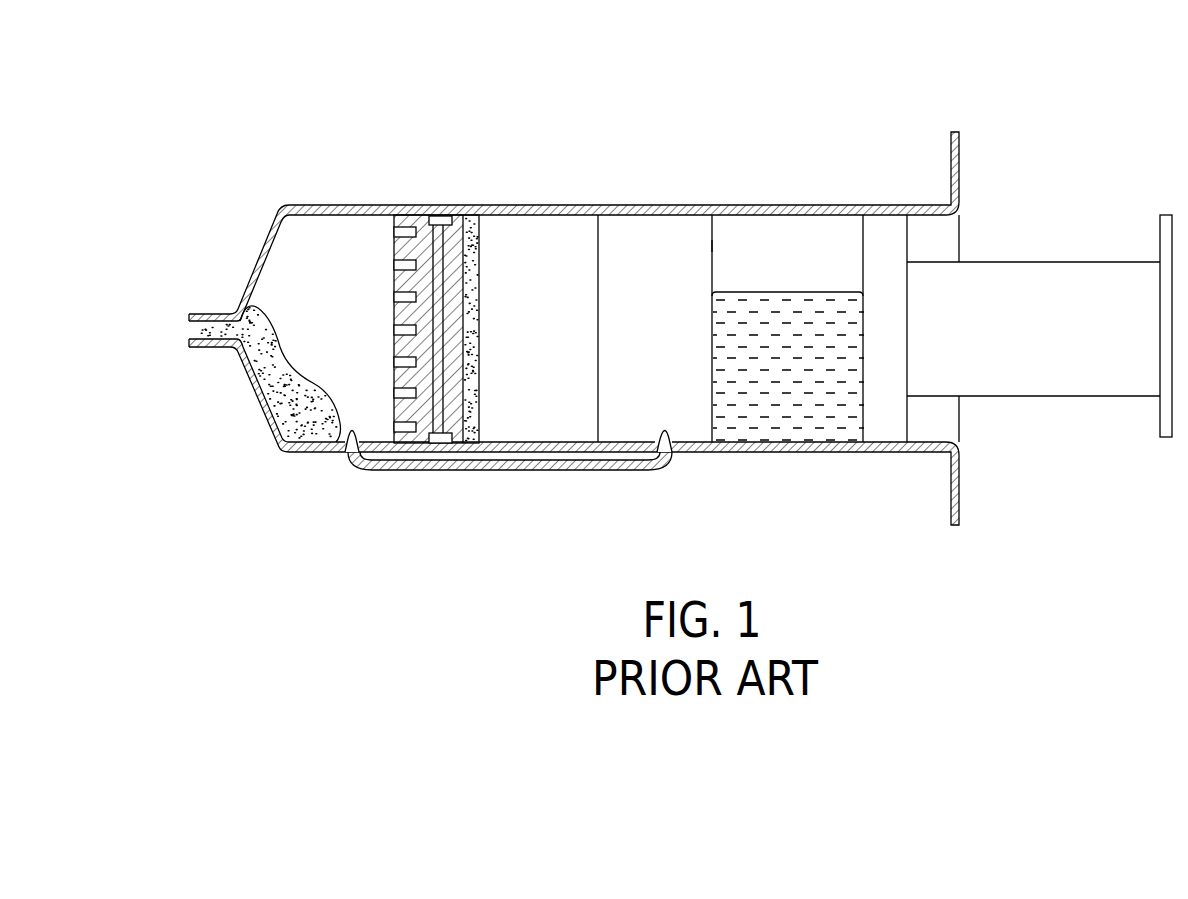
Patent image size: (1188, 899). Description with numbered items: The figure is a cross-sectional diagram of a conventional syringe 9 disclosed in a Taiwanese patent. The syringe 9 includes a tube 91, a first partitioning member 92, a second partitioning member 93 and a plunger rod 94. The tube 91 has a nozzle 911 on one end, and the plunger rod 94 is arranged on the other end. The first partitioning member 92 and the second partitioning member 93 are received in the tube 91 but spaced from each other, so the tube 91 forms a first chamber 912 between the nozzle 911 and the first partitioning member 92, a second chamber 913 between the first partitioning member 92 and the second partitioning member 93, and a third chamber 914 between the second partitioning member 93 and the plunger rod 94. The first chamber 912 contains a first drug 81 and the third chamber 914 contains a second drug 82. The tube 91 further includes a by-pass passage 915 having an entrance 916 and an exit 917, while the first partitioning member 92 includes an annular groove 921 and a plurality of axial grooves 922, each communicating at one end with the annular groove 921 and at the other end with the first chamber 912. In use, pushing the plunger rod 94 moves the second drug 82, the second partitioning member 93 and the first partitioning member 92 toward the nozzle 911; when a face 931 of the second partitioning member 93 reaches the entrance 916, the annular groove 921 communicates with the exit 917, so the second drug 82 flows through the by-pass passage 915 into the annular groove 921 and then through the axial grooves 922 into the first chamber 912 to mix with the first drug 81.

The syringe 9 is at (778, 120).
The tube 91 is at (620, 213).
The nozzle 911 is at (208, 315).
The first chamber 912 is at (322, 243).
The second chamber 913 is at (531, 240).
The third chamber 914 is at (794, 228).
The by-pass passage 915 is at (517, 460).
The entrance 916 is at (667, 442).
The exit 917 is at (350, 432).
The first partitioning member 92 is at (458, 272).
The annular groove 921 is at (438, 443).
The axial grooves 922 is at (405, 432).
The second partitioning member 93 is at (798, 337).
The face 931 is at (712, 250).
The plunger rod 94 is at (1022, 275).
The first drug 81 is at (268, 375).
The second drug 82 is at (803, 418).